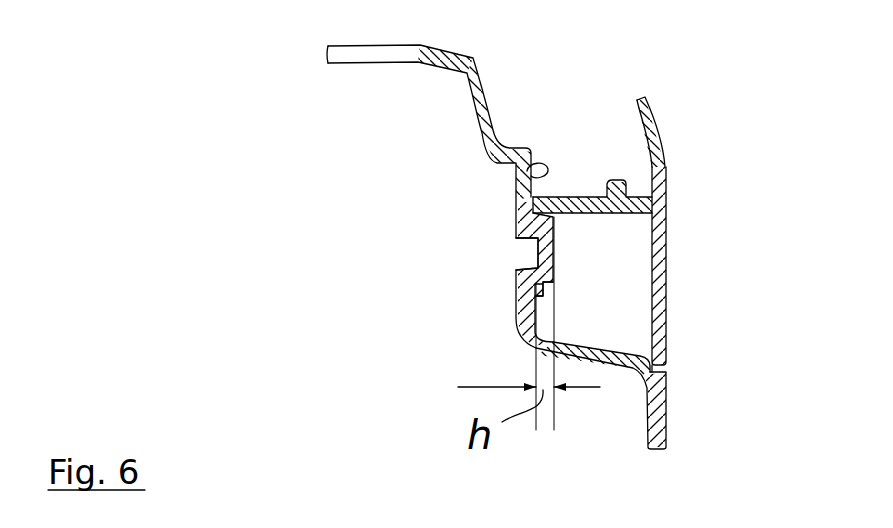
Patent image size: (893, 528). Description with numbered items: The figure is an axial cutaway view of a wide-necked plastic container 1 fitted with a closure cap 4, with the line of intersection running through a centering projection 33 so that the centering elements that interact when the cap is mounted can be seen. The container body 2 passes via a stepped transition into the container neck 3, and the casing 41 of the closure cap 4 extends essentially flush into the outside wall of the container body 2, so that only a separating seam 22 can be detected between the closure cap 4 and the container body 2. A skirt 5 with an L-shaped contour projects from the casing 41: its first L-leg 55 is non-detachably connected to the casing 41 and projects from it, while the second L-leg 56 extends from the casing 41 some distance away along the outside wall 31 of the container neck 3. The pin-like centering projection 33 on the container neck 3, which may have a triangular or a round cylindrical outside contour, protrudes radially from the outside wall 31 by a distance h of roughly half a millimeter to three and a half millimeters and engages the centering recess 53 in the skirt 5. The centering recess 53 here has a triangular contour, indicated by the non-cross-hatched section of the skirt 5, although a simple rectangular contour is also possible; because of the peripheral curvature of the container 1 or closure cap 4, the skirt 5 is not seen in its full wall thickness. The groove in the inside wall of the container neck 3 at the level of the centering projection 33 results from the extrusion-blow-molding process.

The wide-necked plastic container 1 is at (702, 392).
The container body 2 is at (653, 423).
The container neck 3 is at (490, 110).
The closure cap 4 is at (711, 190).
The skirt 5 is at (600, 170).
The separating seam 22 is at (670, 373).
The outside wall of the container neck 31 is at (533, 168).
The centering projection 33 is at (552, 233).
The casing 41 is at (663, 327).
The centering recess 53 is at (570, 250).
The first L-leg 55 is at (578, 197).
The second L-leg 56 is at (543, 285).